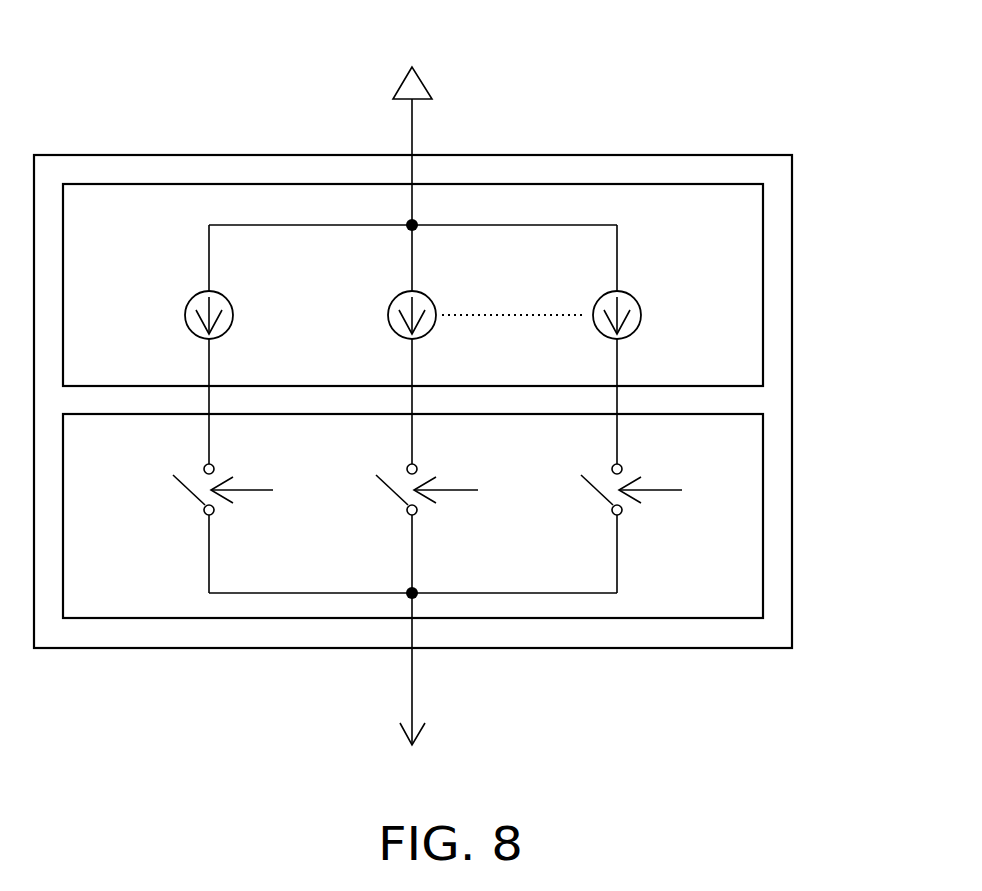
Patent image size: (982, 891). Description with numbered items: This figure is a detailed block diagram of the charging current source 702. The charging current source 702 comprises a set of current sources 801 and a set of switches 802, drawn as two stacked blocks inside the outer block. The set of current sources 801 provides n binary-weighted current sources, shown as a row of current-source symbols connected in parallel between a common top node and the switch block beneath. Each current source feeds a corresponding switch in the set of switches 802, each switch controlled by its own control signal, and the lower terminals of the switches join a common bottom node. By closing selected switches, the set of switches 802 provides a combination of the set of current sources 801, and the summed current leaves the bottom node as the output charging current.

The charging current source 702 is at (536, 155).
The set of current sources 801 is at (763, 284).
The set of switches 802 is at (763, 514).